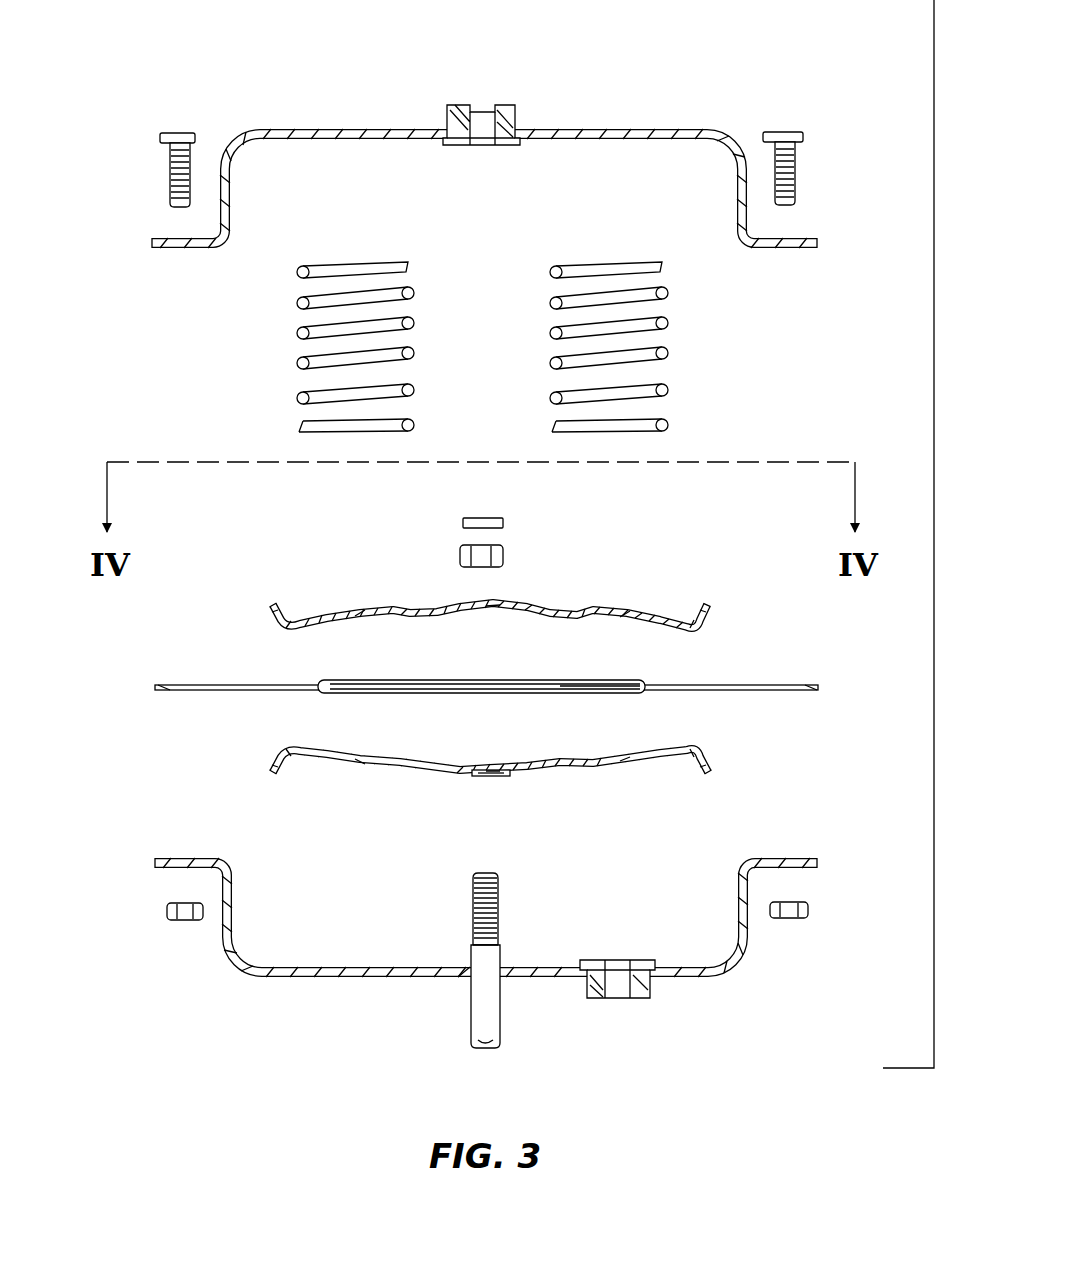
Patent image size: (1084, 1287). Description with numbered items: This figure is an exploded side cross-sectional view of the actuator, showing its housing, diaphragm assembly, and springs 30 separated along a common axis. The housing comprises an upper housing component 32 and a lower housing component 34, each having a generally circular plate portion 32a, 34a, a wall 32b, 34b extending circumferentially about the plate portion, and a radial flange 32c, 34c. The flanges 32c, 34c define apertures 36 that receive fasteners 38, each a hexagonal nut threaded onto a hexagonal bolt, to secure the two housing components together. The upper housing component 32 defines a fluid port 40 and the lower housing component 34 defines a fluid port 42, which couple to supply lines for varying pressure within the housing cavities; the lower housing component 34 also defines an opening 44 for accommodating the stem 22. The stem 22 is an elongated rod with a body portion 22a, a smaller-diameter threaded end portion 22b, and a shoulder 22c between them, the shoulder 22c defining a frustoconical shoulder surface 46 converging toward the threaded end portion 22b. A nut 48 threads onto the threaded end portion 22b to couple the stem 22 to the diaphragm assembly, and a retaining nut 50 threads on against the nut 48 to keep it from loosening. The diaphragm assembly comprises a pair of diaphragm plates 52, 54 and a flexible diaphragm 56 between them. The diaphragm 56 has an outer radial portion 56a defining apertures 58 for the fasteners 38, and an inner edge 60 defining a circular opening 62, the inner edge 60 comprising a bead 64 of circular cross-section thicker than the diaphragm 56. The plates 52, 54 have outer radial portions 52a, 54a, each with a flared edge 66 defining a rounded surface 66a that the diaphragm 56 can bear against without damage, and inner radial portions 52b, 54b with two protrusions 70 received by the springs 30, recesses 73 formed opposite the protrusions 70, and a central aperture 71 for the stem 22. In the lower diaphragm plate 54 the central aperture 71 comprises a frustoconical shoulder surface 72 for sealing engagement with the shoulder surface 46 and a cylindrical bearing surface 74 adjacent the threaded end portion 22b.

The stem 22 is at (488, 981).
The body portion 22a is at (498, 1024).
The threaded end portion 22b is at (500, 896).
The shoulder 22c is at (500, 943).
The springs 30 is at (304, 268).
The upper housing component 32 is at (534, 156).
The plate portion 32a is at (665, 128).
The wall 32b is at (752, 215).
The flange 32c is at (815, 240).
The lower housing component 34 is at (489, 954).
The plate portion 34a is at (563, 982).
The wall 34b is at (752, 890).
The flange 34c is at (158, 862).
The apertures 36 is at (785, 246).
The fasteners 38 is at (180, 132).
The fluid port 40 is at (505, 102).
The fluid port 42 is at (640, 1000).
The opening 44 is at (465, 980).
The shoulder surface 46 is at (478, 948).
The nut 48 is at (460, 556).
The retaining nut 50 is at (480, 516).
The upper diaphragm plate 52 is at (525, 677).
The outer radial portion 52a is at (680, 612).
The inner radial portion 52b is at (545, 602).
The lower diaphragm plate 54 is at (525, 778).
The outer radial portion 54a is at (668, 760).
The inner radial portion 54b is at (540, 777).
The diaphragm 56 is at (484, 682).
The outer radial portion 56a is at (160, 689).
The apertures 58 is at (193, 683).
The inner edge 60 is at (481, 702).
The circular opening 62 is at (380, 690).
The bead 64 is at (590, 682).
The flared edge 66 is at (272, 606).
The rounded surface 66a is at (282, 630).
The protrusions 70 is at (378, 606).
The central aperture 71 is at (490, 607).
The shoulder surface 72 is at (482, 778).
The recesses 73 is at (360, 622).
The bearing surface 74 is at (493, 766).